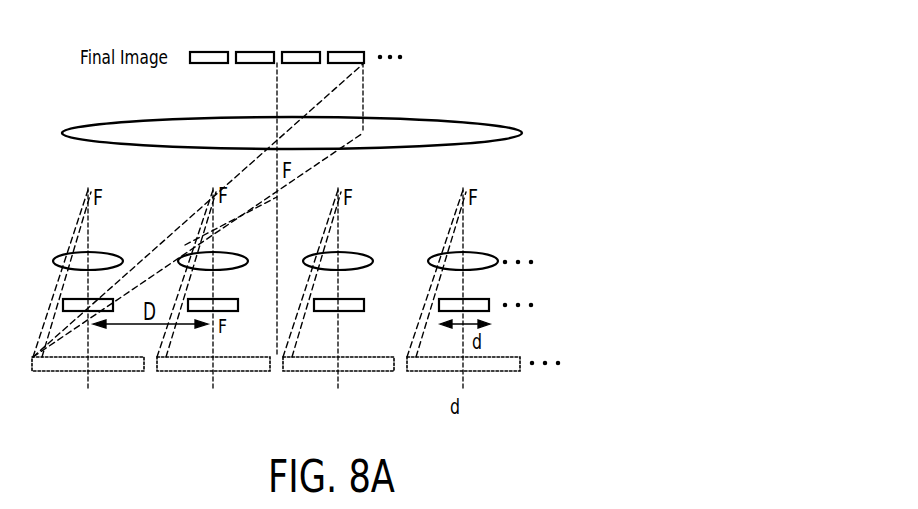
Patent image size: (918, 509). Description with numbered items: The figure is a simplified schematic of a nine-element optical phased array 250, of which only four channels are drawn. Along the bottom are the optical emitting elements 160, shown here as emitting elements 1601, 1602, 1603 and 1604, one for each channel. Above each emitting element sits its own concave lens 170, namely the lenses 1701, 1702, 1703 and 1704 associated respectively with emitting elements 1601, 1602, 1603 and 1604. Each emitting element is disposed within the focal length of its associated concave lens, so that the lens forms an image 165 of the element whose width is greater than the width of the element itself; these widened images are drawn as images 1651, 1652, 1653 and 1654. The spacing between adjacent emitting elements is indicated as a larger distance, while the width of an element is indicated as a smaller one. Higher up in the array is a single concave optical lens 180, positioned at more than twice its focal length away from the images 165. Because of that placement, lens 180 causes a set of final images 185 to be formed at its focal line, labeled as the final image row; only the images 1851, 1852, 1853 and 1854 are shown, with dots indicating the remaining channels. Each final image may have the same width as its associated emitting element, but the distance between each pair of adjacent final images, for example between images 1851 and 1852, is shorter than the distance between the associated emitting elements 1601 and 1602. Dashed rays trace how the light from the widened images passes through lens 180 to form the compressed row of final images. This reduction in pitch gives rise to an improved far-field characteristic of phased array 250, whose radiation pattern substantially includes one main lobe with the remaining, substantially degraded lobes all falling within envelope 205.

The optical phased array 250 is at (497, 73).
The concave optical lens 180 is at (523, 133).
The image 185 is at (287, 33).
The image 1851 is at (206, 50).
The image 1852 is at (258, 50).
The image 1853 is at (302, 50).
The image 1854 is at (352, 50).
The concave lens 170 is at (293, 227).
The concave lens 1701 is at (107, 253).
The concave lens 1702 is at (232, 253).
The concave lens 1703 is at (356, 252).
The concave lens 1704 is at (481, 252).
The optical emitting element 160 is at (320, 260).
The optical emitting element 1601 is at (114, 299).
The optical emitting element 1602 is at (239, 299).
The optical emitting element 1603 is at (364, 299).
The optical emitting element 1604 is at (490, 299).
The image 165 is at (296, 403).
The image 1651 is at (102, 372).
The image 1652 is at (231, 372).
The image 1653 is at (355, 372).
The image 1654 is at (480, 372).
The envelope 205 is at (215, 496).